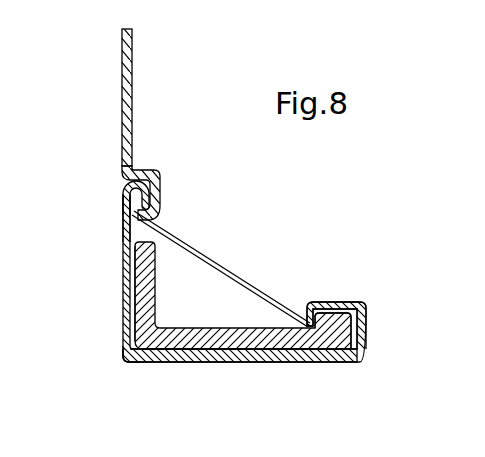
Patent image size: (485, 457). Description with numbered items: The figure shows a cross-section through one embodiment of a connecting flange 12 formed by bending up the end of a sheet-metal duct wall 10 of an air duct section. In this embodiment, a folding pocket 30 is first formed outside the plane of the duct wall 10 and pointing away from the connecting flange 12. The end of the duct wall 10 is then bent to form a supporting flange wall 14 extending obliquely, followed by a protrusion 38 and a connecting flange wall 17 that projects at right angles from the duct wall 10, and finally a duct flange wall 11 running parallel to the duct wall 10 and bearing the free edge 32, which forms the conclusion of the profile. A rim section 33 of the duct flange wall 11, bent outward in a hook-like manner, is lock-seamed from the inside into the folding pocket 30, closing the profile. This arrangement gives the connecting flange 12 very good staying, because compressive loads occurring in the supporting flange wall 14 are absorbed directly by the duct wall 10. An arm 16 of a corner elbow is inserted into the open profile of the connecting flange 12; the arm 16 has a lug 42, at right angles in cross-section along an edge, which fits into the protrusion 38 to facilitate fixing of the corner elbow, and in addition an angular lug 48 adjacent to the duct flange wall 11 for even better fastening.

The duct wall 10 is at (129, 51).
The free edge 32 is at (160, 197).
The folding pocket 30 is at (150, 219).
The rim section 33 is at (123, 194).
The duct flange wall 11 is at (124, 283).
The angular lug 48 is at (134, 311).
The connecting flange 12 is at (116, 359).
The arm 16 is at (187, 344).
The connecting flange wall 17 is at (261, 352).
The supporting flange wall 14 is at (232, 273).
The protrusion 38 is at (322, 304).
The lug 42 is at (338, 320).